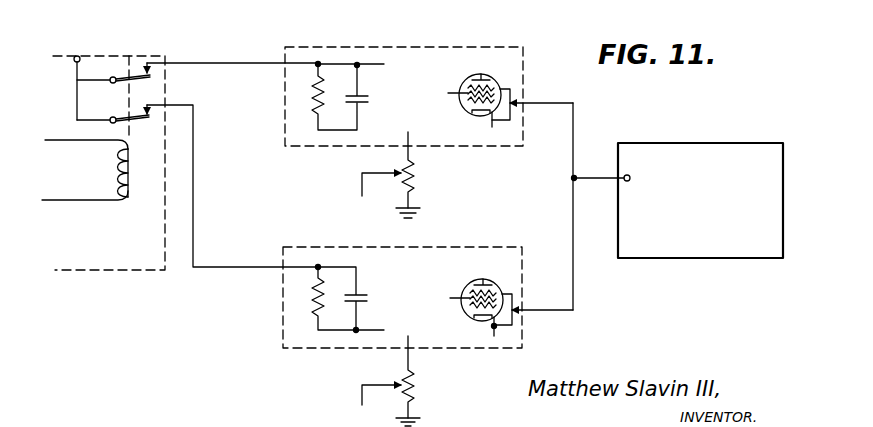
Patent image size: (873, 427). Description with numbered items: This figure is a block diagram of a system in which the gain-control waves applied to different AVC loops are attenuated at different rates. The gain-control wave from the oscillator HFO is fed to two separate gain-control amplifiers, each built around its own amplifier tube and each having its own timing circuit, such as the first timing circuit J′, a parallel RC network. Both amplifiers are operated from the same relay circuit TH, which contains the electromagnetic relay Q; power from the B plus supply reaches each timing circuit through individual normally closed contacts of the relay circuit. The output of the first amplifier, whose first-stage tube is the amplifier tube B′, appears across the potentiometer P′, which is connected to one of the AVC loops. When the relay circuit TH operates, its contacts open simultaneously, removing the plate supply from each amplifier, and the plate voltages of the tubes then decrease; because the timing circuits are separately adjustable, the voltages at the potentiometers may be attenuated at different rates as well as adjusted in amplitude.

The relay circuit TH is at (184, 150).
The electromagnetic relay Q is at (120, 171).
The first timing circuit J′ is at (347, 74).
The first amplifier tube B′ is at (476, 74).
The first potentiometer P′ is at (399, 175).
The oscillator HFO is at (745, 142).